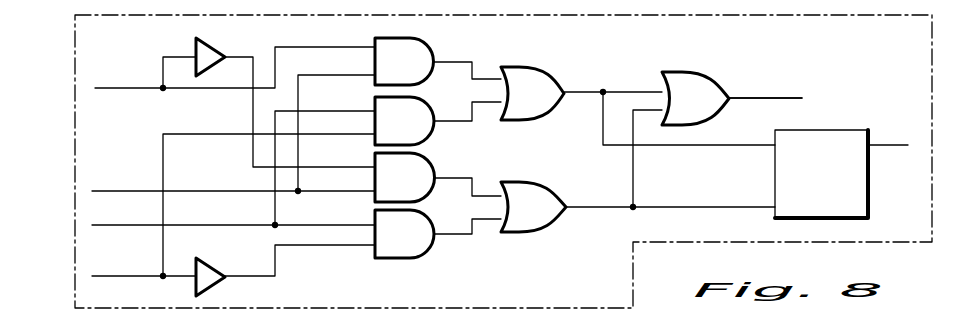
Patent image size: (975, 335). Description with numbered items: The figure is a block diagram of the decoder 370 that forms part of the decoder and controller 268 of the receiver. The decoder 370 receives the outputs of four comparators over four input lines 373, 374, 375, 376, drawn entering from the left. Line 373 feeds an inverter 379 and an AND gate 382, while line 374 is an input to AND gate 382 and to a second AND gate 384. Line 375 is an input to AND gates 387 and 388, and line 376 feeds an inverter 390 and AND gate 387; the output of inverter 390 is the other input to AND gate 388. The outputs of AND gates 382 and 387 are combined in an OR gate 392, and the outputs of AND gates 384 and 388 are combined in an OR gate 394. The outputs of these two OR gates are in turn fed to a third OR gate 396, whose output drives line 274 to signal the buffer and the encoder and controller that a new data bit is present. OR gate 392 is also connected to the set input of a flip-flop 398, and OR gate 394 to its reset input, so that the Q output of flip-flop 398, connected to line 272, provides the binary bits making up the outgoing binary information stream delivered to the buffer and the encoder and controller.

The decoder and controller 268 is at (55, 218).
The decoder 370 is at (75, 60).
The line 373 is at (152, 89).
The line 374 is at (115, 189).
The line 375 is at (113, 208).
The line 376 is at (112, 252).
The inverter 379 is at (195, 47).
The inverter 390 is at (214, 280).
The AND gate 382 is at (437, 52).
The AND gate 387 is at (435, 134).
The AND gate 384 is at (437, 173).
The AND gate 388 is at (418, 260).
The OR gate 392 is at (522, 121).
The OR gate 394 is at (522, 233).
The OR gate 396 is at (698, 72).
The line 274 is at (757, 96).
The line 272 is at (883, 142).
The flip-flop 398 is at (872, 196).